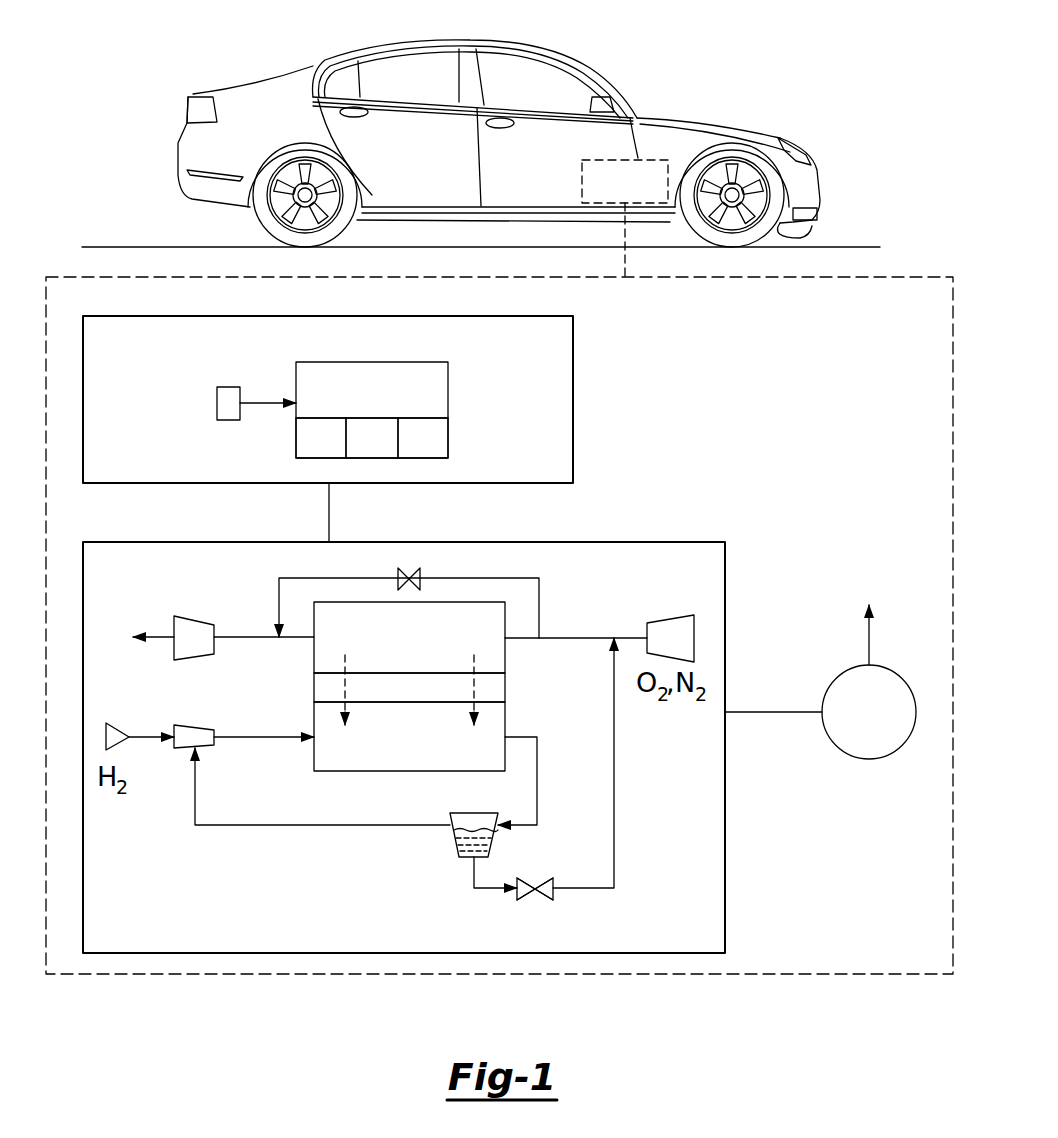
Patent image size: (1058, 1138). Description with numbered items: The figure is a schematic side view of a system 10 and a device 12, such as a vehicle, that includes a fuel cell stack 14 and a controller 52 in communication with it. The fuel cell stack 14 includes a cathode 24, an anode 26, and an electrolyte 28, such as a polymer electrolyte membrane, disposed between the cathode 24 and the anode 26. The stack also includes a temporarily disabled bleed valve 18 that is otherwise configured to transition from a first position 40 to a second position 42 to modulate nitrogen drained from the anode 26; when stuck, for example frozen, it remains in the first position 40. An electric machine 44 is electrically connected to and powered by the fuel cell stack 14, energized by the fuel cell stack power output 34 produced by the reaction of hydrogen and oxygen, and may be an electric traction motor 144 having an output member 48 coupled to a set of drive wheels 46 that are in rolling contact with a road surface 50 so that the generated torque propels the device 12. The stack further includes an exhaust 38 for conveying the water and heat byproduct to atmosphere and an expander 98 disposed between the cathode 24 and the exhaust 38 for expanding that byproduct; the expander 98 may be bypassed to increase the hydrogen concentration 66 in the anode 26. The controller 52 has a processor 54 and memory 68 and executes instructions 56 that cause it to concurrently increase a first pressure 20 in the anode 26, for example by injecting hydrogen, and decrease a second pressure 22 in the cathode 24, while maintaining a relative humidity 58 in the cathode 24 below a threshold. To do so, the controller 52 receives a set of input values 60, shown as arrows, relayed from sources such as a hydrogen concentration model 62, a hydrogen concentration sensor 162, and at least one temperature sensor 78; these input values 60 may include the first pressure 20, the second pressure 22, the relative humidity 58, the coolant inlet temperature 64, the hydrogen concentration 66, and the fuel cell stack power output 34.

The system 10 is at (615, 193).
The device 12 is at (313, 63).
The fuel cell stack 14 is at (550, 709).
The bleed valve 18 is at (536, 887).
The first pressure 20 is at (398, 752).
The second pressure 22 is at (336, 567).
The cathode 24 is at (354, 602).
The anode 26 is at (343, 771).
The electrolyte 28 is at (314, 690).
The fuel cell stack power output 34 is at (869, 620).
The exhaust 38 is at (137, 634).
The first position 40 is at (528, 900).
The second position 42 is at (542, 900).
The electric machine 44 is at (820, 712).
The drive wheels 46 is at (795, 233).
The output member 48 is at (745, 203).
The road surface 50 is at (173, 247).
The controller 52 is at (360, 402).
The processor 54 is at (360, 452).
The instructions 56 is at (412, 452).
The relative humidity 58 is at (440, 652).
The input values 60 is at (173, 339).
The hydrogen concentration model 62 is at (233, 432).
The coolant inlet temperature 64 is at (231, 408).
The hydrogen concentration 66 is at (231, 408).
The memory 68 is at (310, 452).
The temperature sensor 78 is at (233, 432).
The expander 98 is at (200, 616).
The electric traction motor 144 is at (820, 712).
The hydrogen concentration sensor 162 is at (229, 420).